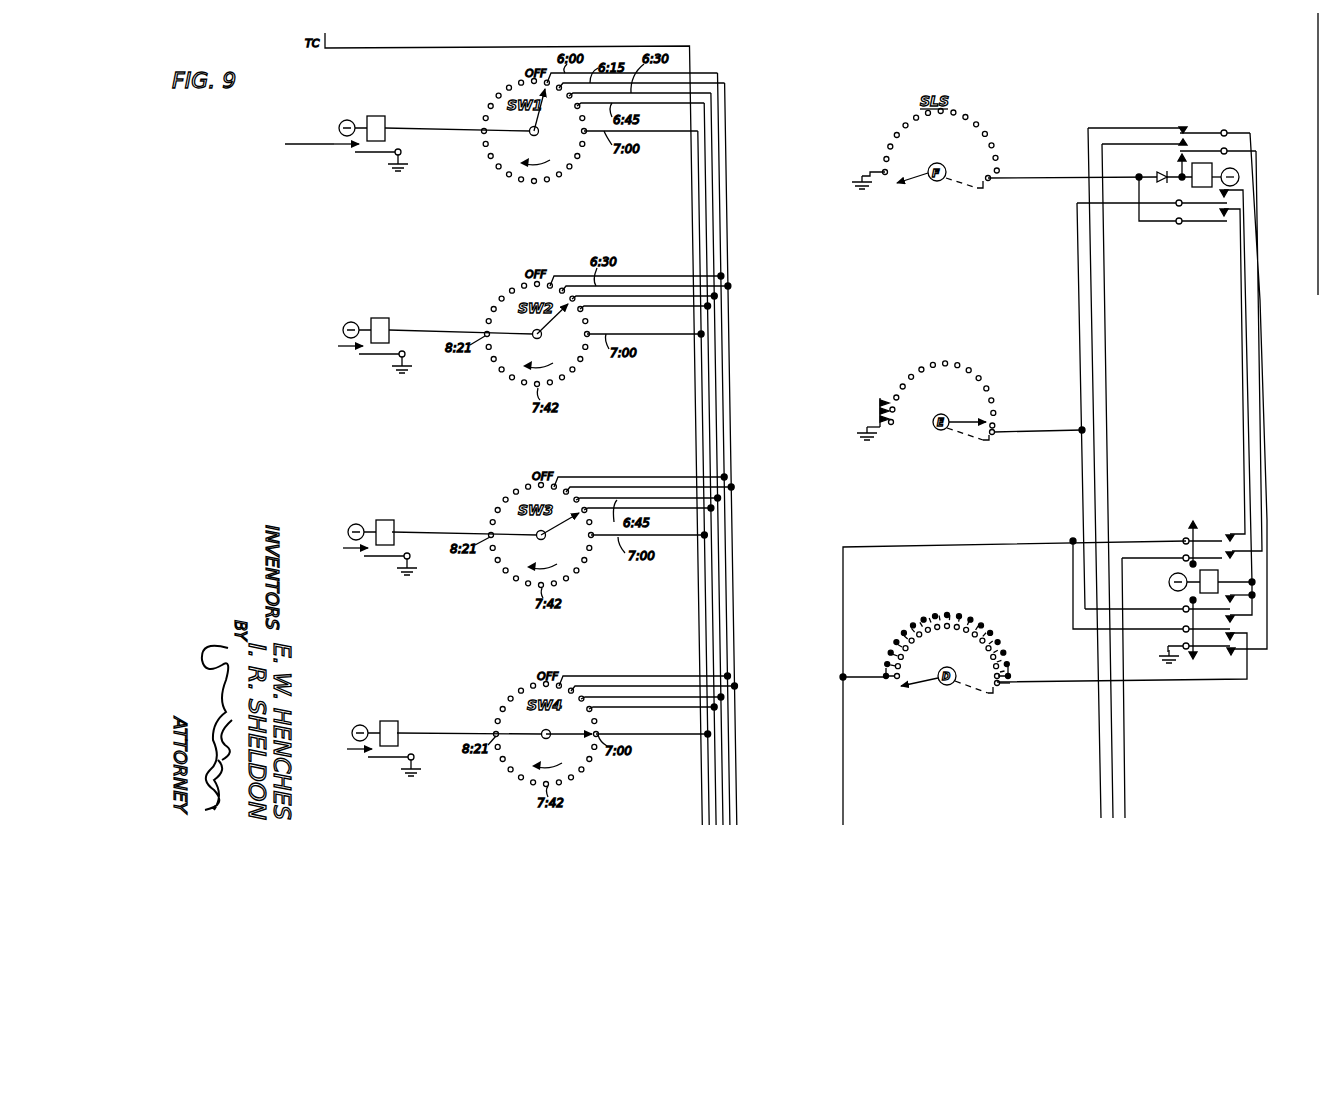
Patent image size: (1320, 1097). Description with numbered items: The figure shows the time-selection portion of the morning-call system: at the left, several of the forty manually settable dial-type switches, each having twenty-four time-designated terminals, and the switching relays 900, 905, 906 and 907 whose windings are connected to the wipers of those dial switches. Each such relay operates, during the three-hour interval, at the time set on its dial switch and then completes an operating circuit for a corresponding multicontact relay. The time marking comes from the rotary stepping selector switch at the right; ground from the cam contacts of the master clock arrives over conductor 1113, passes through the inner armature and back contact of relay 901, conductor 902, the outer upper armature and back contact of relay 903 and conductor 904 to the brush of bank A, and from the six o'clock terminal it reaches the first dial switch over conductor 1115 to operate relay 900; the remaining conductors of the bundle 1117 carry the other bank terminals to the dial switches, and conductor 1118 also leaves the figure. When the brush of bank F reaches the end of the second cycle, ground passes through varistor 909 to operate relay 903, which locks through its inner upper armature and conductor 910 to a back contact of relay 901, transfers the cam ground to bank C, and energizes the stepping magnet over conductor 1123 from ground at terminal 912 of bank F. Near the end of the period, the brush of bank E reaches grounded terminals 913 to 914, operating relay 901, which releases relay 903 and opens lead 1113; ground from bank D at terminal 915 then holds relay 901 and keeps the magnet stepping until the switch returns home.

The switching relay 900 is at (386, 117).
The switching relay 905 is at (390, 318).
The switching relay 906 is at (393, 520).
The switching relay 907 is at (397, 720).
The time clock line TC 1117 is at (689, 188).
The conductor 1115 is at (730, 388).
The terminal of terminal bank F 912 is at (884, 171).
The varistor 909 is at (1158, 172).
The relay 903 is at (1192, 185).
The conductor 910 is at (1260, 207).
The conductor 902 is at (1255, 302).
The conductor 904 is at (1097, 368).
The conductor 1118 is at (1319, 412).
The terminal of terminal bank E 913 is at (891, 398).
The terminal of terminal bank E 914 is at (895, 432).
The relay 901 is at (1200, 574).
The conductor 1123 is at (843, 624).
The first terminal of terminal bank D 915 is at (1003, 685).
The conductor 1113 is at (1127, 730).